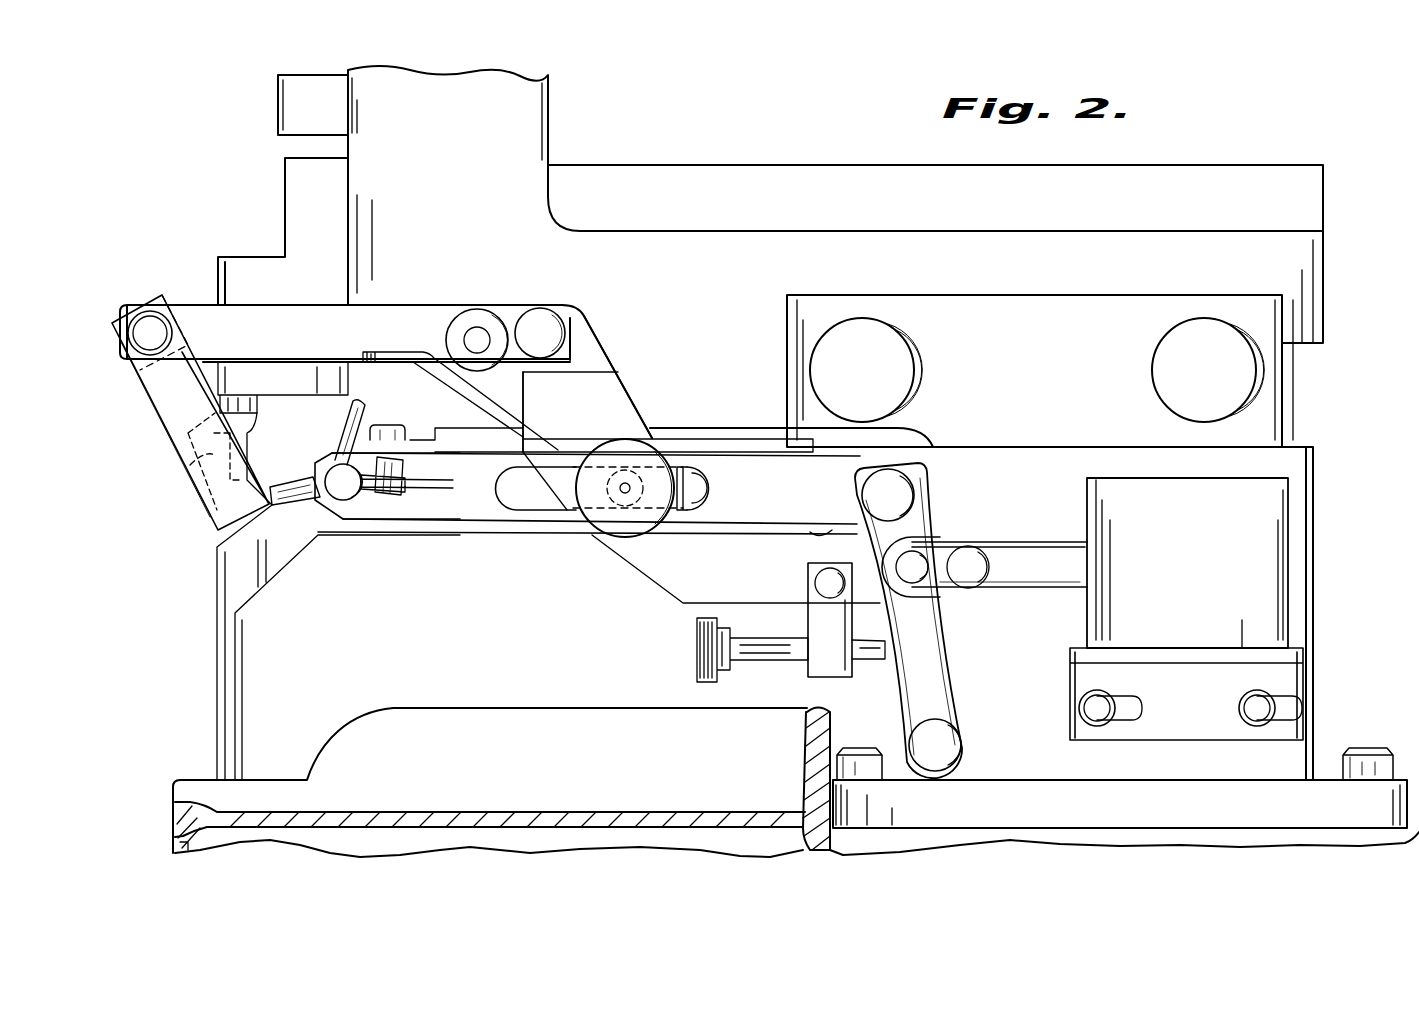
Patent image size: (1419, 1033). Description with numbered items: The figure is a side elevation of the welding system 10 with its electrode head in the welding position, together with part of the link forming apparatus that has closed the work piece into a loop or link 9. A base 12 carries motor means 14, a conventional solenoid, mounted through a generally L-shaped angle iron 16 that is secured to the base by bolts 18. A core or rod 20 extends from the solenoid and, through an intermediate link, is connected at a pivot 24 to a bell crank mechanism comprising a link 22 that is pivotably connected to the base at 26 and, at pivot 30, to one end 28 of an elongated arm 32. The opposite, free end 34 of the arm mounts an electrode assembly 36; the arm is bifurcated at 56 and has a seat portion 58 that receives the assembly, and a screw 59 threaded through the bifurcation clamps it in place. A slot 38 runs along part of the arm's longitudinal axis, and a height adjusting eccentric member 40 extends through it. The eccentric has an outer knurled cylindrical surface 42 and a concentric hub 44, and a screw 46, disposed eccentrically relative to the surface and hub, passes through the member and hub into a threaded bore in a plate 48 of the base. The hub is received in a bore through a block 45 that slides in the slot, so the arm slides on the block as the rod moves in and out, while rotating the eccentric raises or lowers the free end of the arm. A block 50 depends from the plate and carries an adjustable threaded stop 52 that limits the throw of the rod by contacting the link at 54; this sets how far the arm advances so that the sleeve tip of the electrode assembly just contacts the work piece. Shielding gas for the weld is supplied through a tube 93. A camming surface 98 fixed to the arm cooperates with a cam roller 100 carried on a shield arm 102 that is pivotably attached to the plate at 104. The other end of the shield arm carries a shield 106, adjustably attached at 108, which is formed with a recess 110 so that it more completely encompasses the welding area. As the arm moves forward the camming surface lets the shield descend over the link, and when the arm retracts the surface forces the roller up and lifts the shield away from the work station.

The link 9 is at (225, 510).
The welding system 10 is at (187, 283).
The base 12 is at (1293, 757).
The motor means 14 is at (1267, 590).
The L-shaped angle iron 16 is at (1293, 683).
The bolts 18 is at (1095, 722).
The core or rod 20 is at (1040, 573).
The link 22 is at (937, 703).
The pivot connection 24 is at (917, 553).
The pivot connection 26 is at (960, 753).
The end of arm 28 is at (925, 473).
The pivot connection 30 is at (860, 513).
The elongated arm 32 is at (708, 523).
The free distal end of arm 34 is at (373, 520).
The electrode assembly 36 is at (281, 509).
The slot 38 is at (525, 505).
The height adjusting eccentric member 40 is at (609, 560).
The knurled cylindrical surface 42 is at (692, 468).
The hub 44 is at (673, 510).
The block 45 is at (707, 495).
The screw 46 is at (626, 493).
The plate 48 is at (625, 413).
The block 50 is at (820, 667).
The adjustable threaded stop 52 is at (873, 663).
The stop engagement point 54 is at (888, 643).
The bifurcation 56 is at (423, 477).
The seat portion 58 is at (327, 468).
The screw 59 is at (393, 428).
The tube 93 is at (357, 405).
The camming surface 98 is at (507, 412).
The cam roller 100 is at (477, 333).
The shield arm 102 is at (428, 290).
The pivot attachment 104 is at (537, 333).
The shield 106 is at (150, 395).
The adjustable attachment 108 is at (128, 350).
The recess 110 is at (190, 465).